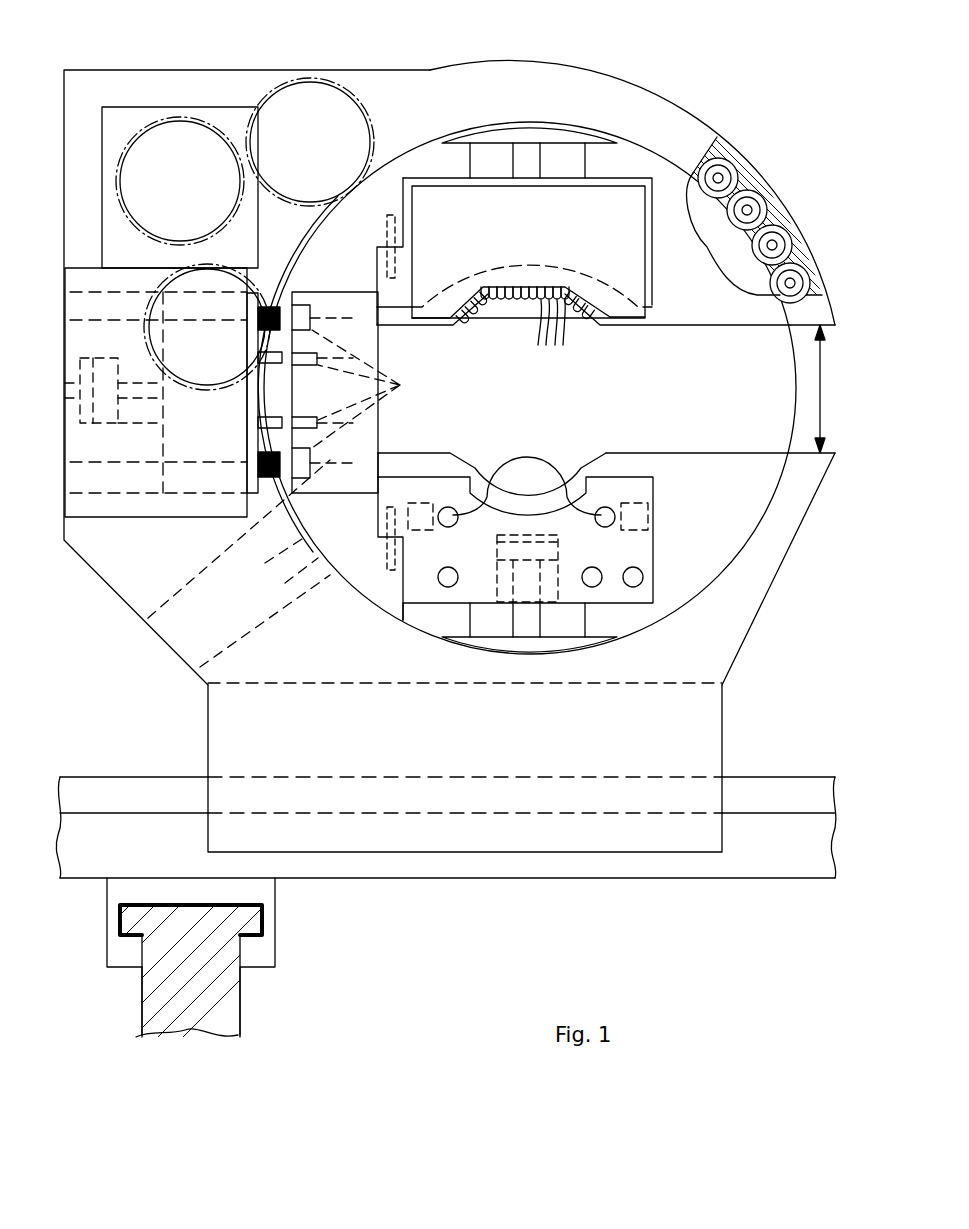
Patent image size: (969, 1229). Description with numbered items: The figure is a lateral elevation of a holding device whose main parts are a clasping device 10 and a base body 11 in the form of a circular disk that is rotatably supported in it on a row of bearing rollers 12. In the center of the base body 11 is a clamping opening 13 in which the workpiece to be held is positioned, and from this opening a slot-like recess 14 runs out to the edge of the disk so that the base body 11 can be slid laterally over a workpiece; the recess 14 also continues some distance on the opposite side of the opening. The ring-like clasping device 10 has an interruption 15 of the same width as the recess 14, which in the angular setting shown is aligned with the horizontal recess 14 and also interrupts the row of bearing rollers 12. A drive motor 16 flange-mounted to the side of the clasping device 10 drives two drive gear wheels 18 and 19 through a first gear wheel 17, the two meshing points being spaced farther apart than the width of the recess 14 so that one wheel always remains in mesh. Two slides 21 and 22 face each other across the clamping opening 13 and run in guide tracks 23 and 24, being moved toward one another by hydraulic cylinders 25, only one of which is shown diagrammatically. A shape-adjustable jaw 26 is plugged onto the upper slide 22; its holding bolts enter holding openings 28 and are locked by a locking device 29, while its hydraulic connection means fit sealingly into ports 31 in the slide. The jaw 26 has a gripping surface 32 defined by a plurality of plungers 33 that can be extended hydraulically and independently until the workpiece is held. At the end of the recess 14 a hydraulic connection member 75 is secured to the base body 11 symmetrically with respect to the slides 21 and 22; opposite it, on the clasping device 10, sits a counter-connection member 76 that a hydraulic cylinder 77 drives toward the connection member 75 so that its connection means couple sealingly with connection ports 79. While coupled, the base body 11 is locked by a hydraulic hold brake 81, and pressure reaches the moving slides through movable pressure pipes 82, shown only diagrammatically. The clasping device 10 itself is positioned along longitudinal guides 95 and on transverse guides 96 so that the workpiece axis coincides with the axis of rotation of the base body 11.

The clasping device 10 is at (420, 86).
The base body 11 is at (716, 478).
The bearing rollers 12 is at (800, 262).
The clamping opening 13 is at (534, 403).
The slot-like recess 14 is at (749, 408).
The interruption 15 is at (826, 385).
The drive motor 16 is at (132, 108).
The first gear wheel 17 is at (208, 124).
The drive gear wheel 18 is at (352, 90).
The drive gear wheel 19 is at (268, 290).
The slide 21 is at (653, 545).
The slide 22 is at (653, 279).
The guide track 23 is at (582, 620).
The guide track 24 is at (580, 163).
The hydraulic cylinder 25 is at (497, 580).
The shape-adjustable jaw 26 is at (613, 239).
The holding opening 28 is at (527, 476).
The locking device 29 is at (421, 503).
The connection port 31 is at (438, 577).
The gripping surface 32 is at (514, 304).
The plunger 33 is at (552, 335).
The hydraulic connection member 75 is at (378, 352).
The counter-connection member 76 is at (254, 496).
The hydraulic cylinder 77 is at (82, 420).
The connection port 79 is at (370, 389).
The hydraulic hold brake 81 is at (172, 600).
The movable pressure pipe 82 is at (386, 238).
The longitudinal guide 95 is at (222, 1004).
The transverse guide 96 is at (780, 856).